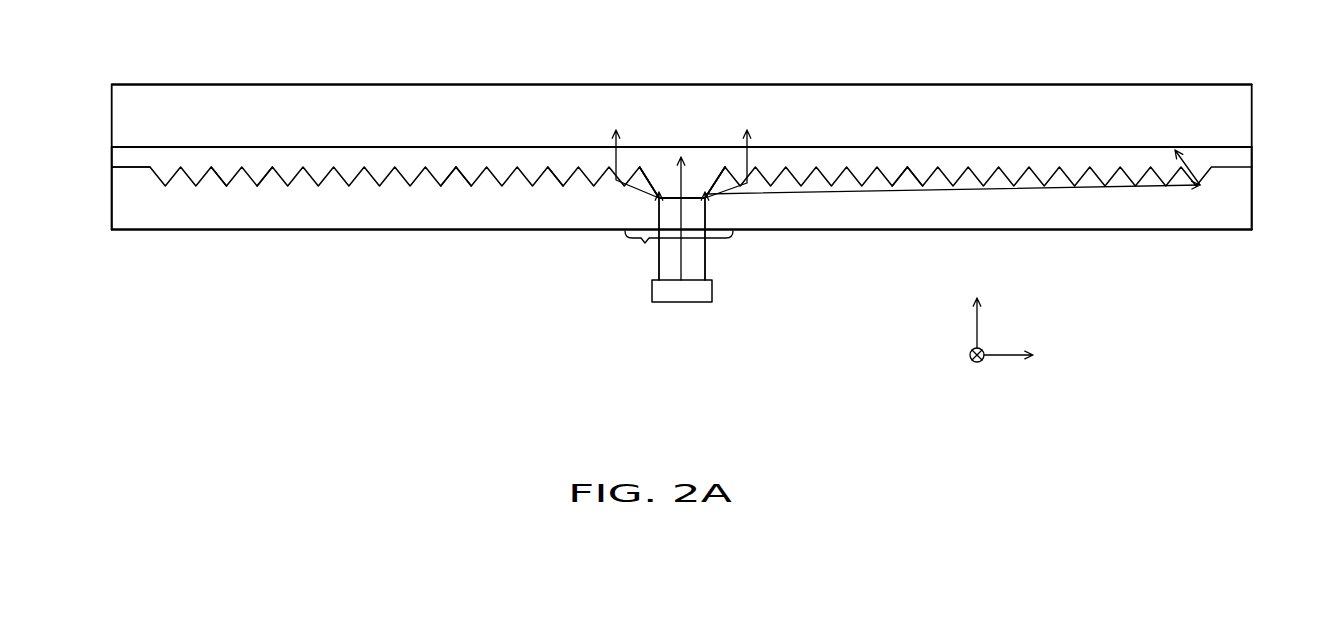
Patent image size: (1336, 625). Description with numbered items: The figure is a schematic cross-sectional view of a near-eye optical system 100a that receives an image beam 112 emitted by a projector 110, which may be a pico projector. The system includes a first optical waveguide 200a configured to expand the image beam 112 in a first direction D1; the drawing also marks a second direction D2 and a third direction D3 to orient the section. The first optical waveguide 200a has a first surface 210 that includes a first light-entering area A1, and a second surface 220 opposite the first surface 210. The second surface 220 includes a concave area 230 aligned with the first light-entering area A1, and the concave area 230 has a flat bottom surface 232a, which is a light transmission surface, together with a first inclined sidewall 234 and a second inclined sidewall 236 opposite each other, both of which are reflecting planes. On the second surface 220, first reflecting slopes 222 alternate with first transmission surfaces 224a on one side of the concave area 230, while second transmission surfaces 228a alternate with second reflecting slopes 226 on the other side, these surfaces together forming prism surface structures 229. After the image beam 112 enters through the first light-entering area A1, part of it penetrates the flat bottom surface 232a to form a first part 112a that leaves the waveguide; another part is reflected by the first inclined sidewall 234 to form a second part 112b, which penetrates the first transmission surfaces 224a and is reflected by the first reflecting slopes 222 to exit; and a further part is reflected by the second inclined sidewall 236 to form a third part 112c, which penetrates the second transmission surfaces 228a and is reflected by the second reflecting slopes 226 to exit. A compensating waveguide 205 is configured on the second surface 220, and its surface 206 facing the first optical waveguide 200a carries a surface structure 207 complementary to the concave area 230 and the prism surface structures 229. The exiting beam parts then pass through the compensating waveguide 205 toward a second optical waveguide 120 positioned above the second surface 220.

The near-eye optical system 100a is at (1315, 357).
The projector 110 is at (714, 290).
The image beam 112 is at (685, 343).
The first part of the image beam 112a is at (676, 198).
The second part of the image beam 112b is at (659, 198).
The third part of the image beam 112c is at (713, 190).
The second optical waveguide 120 is at (127, 117).
The first optical waveguide 200a is at (1182, 213).
The compensating waveguide 205 is at (223, 160).
The surface of the compensating waveguide 206 is at (221, 182).
The surface structure 207 is at (267, 177).
The first surface 210 is at (167, 238).
The second surface 220 is at (138, 159).
The first reflecting slopes 222 is at (467, 164).
The first transmission surfaces 224a is at (440, 172).
The second reflecting slopes 226 is at (919, 166).
The second transmission surfaces 228a is at (892, 172).
The prism surface structures 229 is at (558, 173).
The concave area 230 is at (680, 157).
The flat bottom surface 232a is at (689, 198).
The first inclined sidewall 234 is at (658, 170).
The second inclined sidewall 236 is at (711, 190).
The first light-entering area A1 is at (645, 242).
The first direction D1 is at (1023, 356).
The second direction D2 is at (963, 367).
The third direction D3 is at (977, 309).